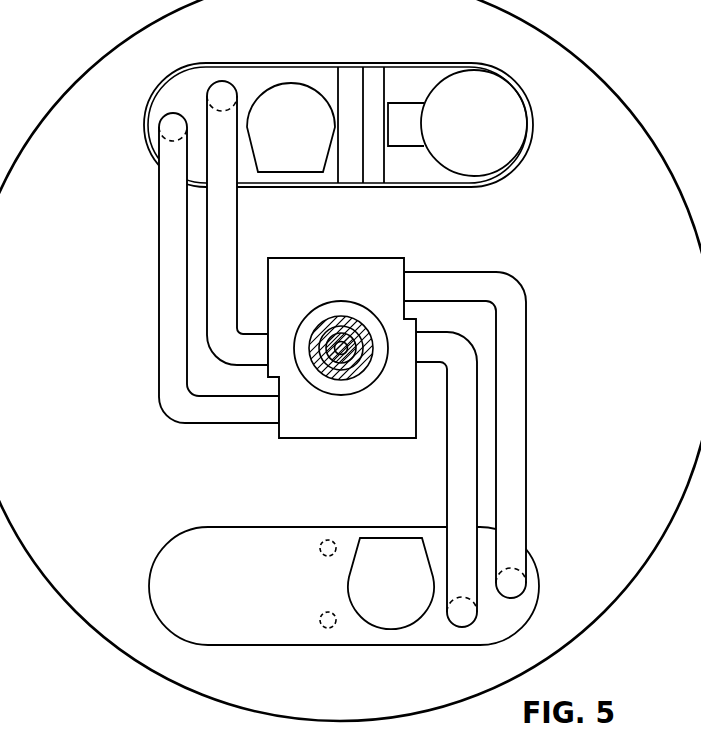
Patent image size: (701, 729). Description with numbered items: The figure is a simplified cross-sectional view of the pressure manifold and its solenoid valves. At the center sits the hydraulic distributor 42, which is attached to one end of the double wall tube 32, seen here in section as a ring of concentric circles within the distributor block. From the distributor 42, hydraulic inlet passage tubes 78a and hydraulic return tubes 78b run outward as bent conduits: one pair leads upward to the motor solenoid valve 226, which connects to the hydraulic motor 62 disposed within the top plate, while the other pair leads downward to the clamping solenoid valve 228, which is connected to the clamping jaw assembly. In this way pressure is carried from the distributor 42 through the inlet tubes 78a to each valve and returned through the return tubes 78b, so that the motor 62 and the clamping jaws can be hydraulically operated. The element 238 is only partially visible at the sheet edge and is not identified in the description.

The motor solenoid valve 226 is at (292, 96).
The hydraulic motor 62 is at (490, 130).
The hydraulic inlet passage tubes 78a is at (170, 287).
The hydraulic return tubes 78b is at (232, 214).
The hydraulic distributor 42 is at (372, 272).
The double wall tube 32 is at (342, 378).
The clamping solenoid valve 228 is at (389, 613).
The element partially shown at sheet edge 238 is at (138, 723).